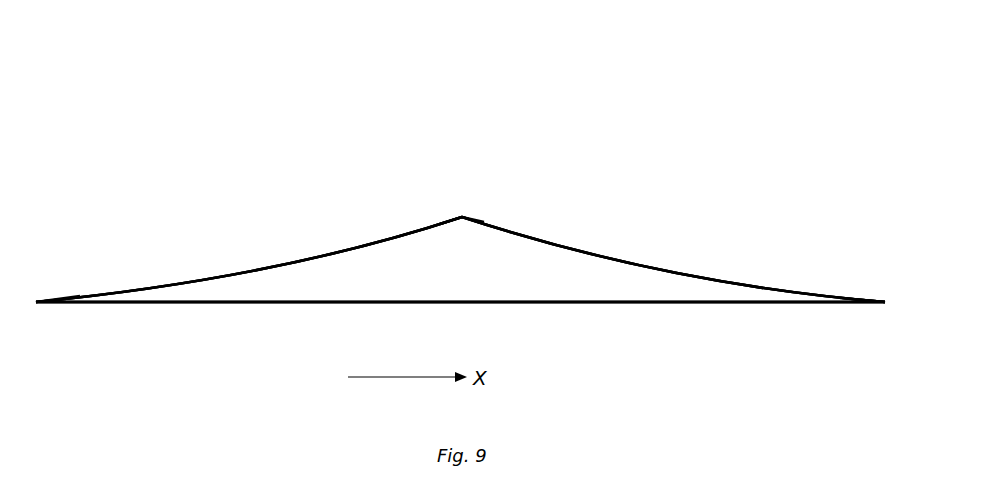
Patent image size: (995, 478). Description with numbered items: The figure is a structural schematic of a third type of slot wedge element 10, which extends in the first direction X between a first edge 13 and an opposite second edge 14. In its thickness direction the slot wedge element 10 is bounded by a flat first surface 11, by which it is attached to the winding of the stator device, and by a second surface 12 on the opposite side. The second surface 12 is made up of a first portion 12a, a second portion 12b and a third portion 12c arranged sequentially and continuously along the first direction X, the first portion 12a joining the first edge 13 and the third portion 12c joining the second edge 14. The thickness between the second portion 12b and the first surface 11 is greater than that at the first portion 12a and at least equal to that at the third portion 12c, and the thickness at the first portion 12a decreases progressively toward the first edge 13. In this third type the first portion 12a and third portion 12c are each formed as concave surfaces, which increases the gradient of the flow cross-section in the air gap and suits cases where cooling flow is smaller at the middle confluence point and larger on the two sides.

The slot wedge element 10 is at (453, 35).
The first surface 11 is at (313, 302).
The second surface 12 is at (427, 209).
The first portion 12a is at (233, 278).
The second portion 12b is at (462, 217).
The third portion 12c is at (637, 267).
The first edge 13 is at (38, 300).
The second edge 14 is at (870, 297).